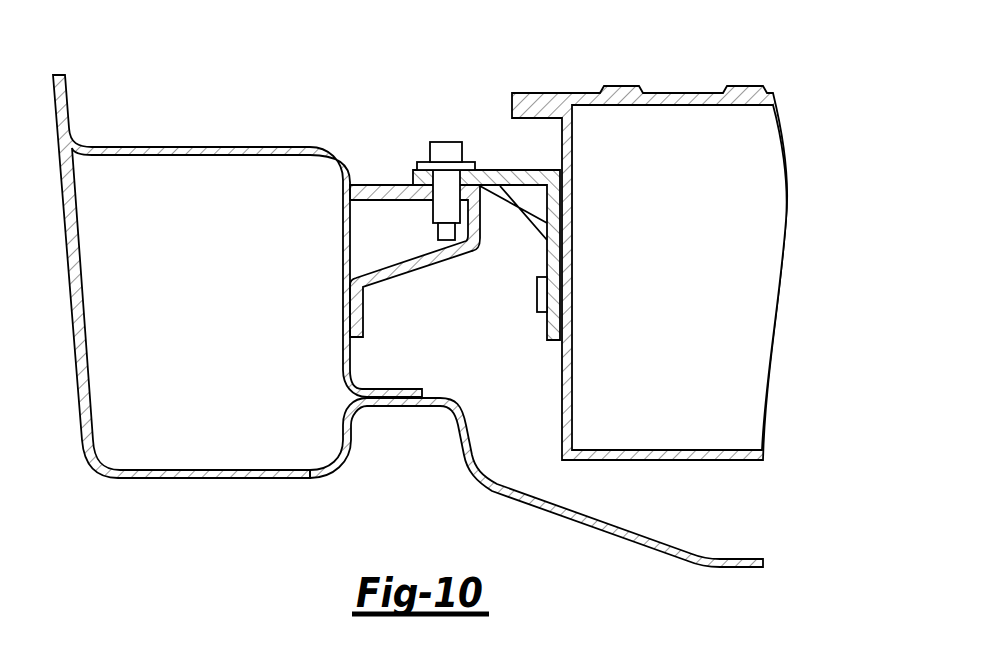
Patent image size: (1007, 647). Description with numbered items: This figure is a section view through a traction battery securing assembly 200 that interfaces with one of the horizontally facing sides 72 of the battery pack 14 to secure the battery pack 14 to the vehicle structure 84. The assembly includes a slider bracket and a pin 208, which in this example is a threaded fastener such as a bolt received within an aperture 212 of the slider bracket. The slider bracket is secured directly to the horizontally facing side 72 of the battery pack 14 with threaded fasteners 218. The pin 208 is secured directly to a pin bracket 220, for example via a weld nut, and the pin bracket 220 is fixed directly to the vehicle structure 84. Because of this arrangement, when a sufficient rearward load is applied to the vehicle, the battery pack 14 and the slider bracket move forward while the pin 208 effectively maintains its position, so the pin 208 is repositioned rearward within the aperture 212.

The battery pack 14 is at (692, 93).
The horizontally facing side 72 is at (560, 150).
The vehicle structure 84 is at (198, 147).
The traction battery securing assembly 200 is at (417, 305).
The pin 208 is at (447, 142).
The aperture 212 is at (456, 179).
The threaded fasteners 218 is at (543, 291).
The pin bracket 220 is at (438, 260).